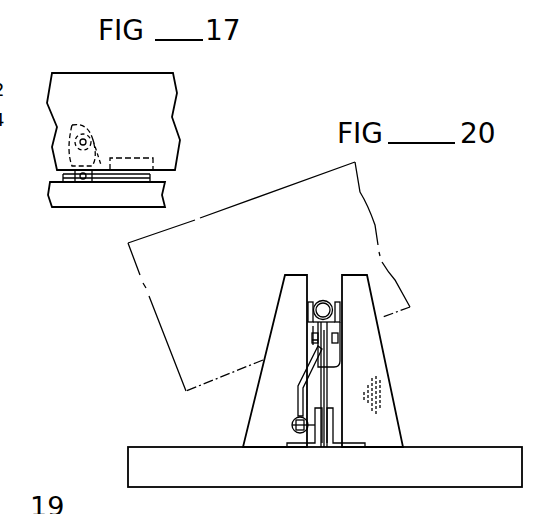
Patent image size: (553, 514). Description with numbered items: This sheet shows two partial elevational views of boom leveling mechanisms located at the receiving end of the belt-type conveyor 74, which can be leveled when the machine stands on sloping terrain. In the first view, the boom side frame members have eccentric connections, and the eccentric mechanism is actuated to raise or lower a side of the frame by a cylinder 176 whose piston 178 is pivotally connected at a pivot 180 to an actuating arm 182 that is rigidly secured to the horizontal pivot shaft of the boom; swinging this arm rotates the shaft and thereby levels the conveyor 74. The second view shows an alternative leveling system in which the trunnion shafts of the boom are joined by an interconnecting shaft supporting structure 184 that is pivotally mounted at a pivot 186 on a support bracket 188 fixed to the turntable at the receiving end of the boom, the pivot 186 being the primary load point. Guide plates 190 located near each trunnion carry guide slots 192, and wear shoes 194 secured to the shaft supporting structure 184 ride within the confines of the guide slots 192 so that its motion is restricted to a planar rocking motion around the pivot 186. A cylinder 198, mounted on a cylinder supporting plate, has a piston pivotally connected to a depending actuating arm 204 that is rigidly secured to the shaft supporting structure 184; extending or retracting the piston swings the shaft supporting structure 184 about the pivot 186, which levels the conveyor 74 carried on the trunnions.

In FIG. 20, the conveyor 74 is at (226, 207).
In FIG. 17, the cylinder 176 is at (147, 158).
In FIG. 17, the piston 178 is at (103, 158).
In FIG. 17, the pivotal connection 180 is at (83, 174).
In FIG. 17, the actuating arm 182 is at (78, 152).
In FIG. 20, the shaft supporting structure 184 is at (333, 350).
In FIG. 20, the pivot 186 is at (338, 340).
In FIG. 20, the support bracket 188 is at (323, 378).
In FIG. 20, the guide plates 190 is at (385, 429).
In FIG. 20, the guide slots 192 is at (330, 298).
In FIG. 20, the wear shoes 194 is at (321, 299).
In FIG. 20, the cylinder 198 is at (292, 430).
In FIG. 20, the depending actuating arm 204 is at (333, 378).